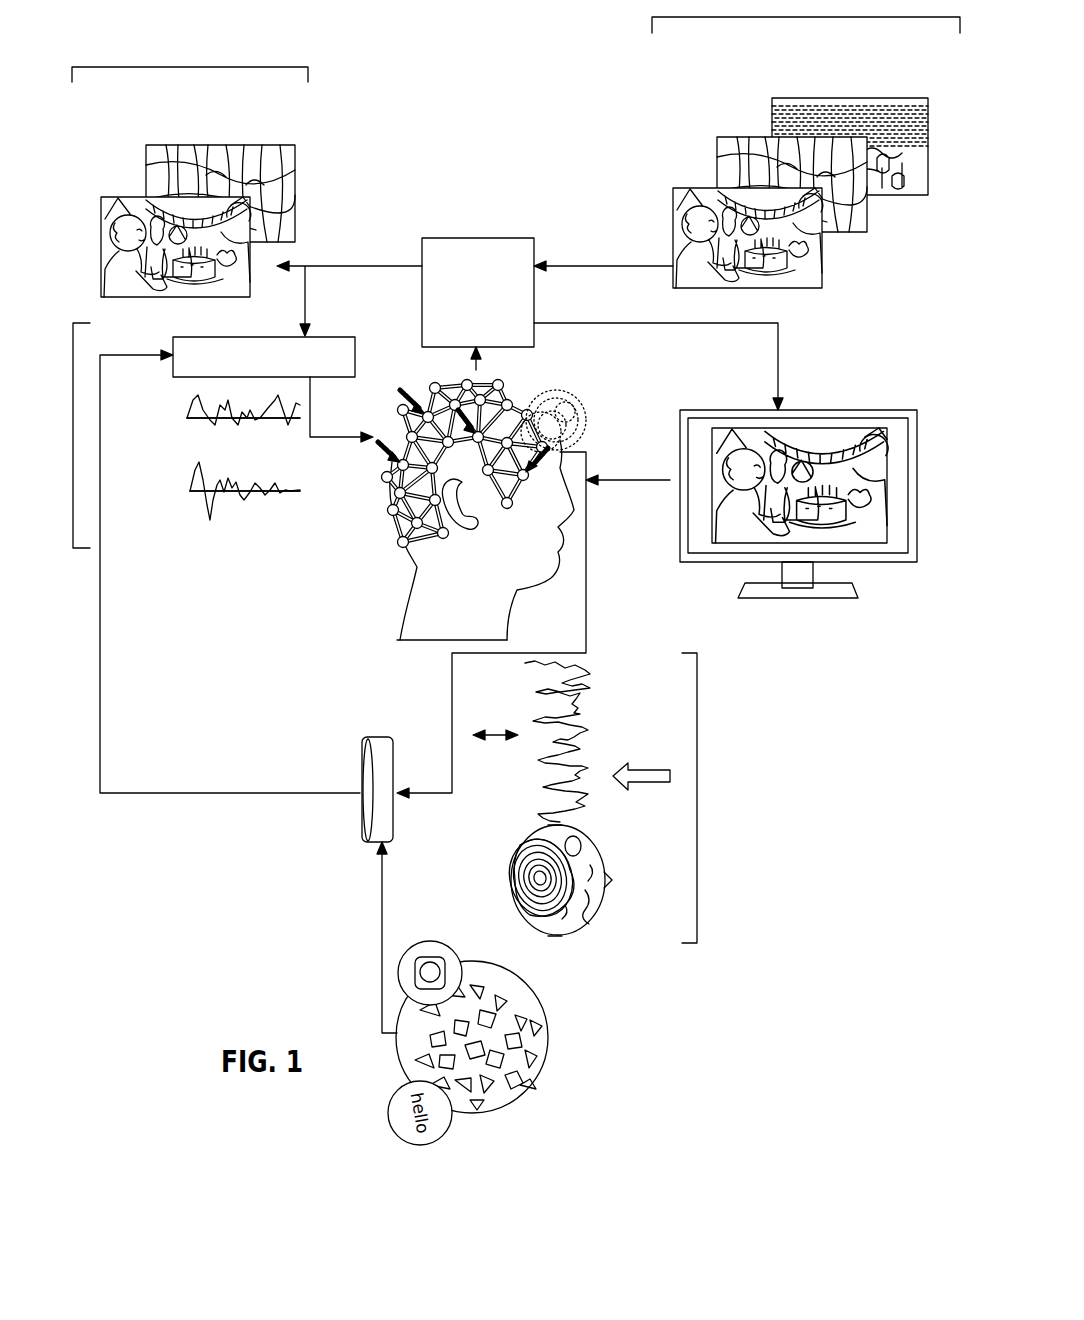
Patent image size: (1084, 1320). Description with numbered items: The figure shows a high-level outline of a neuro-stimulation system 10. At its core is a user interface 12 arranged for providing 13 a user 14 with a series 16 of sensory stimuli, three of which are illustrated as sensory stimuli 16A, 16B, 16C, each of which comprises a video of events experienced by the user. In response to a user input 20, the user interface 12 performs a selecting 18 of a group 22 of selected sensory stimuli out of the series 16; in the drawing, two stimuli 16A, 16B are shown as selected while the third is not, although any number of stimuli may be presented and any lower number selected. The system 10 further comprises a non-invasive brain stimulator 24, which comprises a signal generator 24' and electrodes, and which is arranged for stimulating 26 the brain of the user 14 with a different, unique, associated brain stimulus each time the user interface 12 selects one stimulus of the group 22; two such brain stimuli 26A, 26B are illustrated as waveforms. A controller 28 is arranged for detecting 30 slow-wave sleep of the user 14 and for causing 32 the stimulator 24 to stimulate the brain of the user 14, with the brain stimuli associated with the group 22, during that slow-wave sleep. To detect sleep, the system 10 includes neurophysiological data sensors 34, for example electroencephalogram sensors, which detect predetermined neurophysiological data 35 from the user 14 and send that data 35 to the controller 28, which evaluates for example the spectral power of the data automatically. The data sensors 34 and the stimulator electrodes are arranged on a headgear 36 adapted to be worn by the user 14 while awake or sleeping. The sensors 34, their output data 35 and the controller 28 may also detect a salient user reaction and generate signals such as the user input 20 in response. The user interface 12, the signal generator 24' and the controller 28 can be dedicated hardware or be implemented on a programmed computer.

The neuro-stimulation system 10 is at (448, 120).
The user interface 12 is at (503, 238).
The providing 13 is at (630, 480).
The user 14 is at (397, 643).
The series of sensory stimuli 16 is at (806, 16).
The sensory stimulus 16A is at (101, 205).
The sensory stimulus 16B is at (188, 145).
The sensory stimulus 16C is at (903, 98).
The selecting 18 is at (378, 266).
The user input 20 is at (478, 368).
The group of selected sensory stimuli 22 is at (190, 62).
The non-invasive brain stimulator 24 is at (68, 435).
The signal generator 24' is at (264, 357).
The stimulating 26 is at (342, 440).
The brain stimulus 26A is at (227, 428).
The brain stimulus 26B is at (225, 505).
The controller 28 is at (360, 818).
The detecting 30 is at (598, 798).
The causing 32 is at (212, 793).
The neurophysiological data sensors 34 is at (545, 445).
The neurophysiological data 35 is at (586, 555).
The headgear 36 is at (420, 565).